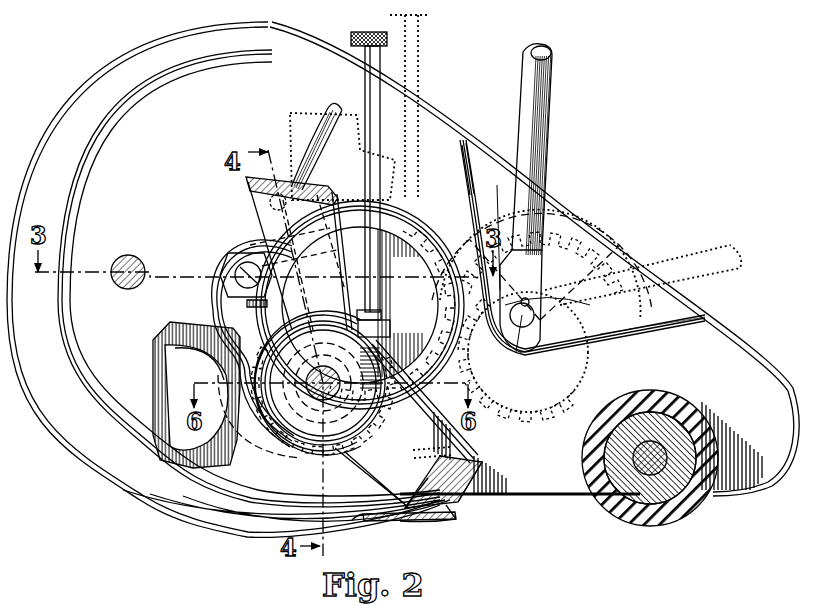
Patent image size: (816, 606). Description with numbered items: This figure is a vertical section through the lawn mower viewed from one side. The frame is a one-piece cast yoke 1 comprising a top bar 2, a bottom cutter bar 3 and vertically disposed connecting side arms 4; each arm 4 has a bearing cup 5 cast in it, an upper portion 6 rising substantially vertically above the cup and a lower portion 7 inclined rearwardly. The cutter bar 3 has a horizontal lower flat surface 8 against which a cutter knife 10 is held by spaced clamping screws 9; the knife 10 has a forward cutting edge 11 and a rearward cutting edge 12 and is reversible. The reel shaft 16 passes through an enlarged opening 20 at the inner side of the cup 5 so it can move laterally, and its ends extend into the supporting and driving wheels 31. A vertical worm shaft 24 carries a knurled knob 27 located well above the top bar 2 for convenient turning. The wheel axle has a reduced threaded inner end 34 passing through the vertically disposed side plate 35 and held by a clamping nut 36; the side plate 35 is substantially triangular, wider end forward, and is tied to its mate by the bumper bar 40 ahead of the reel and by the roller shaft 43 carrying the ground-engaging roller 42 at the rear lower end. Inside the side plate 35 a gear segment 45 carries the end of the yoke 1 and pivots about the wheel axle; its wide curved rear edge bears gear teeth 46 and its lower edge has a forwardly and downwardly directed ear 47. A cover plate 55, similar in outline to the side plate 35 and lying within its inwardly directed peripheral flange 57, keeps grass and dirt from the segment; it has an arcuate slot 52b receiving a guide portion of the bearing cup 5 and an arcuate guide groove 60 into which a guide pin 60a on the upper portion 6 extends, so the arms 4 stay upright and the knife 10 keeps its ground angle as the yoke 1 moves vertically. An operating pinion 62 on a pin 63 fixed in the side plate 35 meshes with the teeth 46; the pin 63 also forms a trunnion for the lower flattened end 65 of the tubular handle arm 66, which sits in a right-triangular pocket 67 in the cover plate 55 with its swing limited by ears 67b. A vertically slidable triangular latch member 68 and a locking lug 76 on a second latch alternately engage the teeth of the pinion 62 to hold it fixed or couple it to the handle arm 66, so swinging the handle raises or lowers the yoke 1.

The yoke 1 is at (250, 212).
The top bar 2 is at (246, 181).
The bottom cutter bar 3 is at (455, 495).
The connecting side arms 4 is at (372, 452).
The bearing cup 5 is at (282, 412).
The upper portion of arm 6 is at (272, 308).
The lower portion of arm 7 is at (470, 463).
The lower flat surface 8 is at (437, 500).
The clamping screws 9 is at (424, 523).
The cutter knife 10 is at (395, 522).
The forward cutting edge 11 is at (378, 522).
The rearward cutting edge 12 is at (447, 512).
The shaft 16 is at (323, 366).
The enlarged opening 20 is at (312, 414).
The worm shaft 24 is at (374, 110).
The knurled knob 27 is at (364, 35).
The supporting and driving wheels 31 is at (82, 80).
The reduced threaded inner end 34 is at (240, 266).
The side plate 35 is at (172, 364).
The clamping nut 36 is at (234, 271).
The bumper bar 40 is at (123, 257).
The ground-engaging roller 42 is at (688, 512).
The roller shaft 43 is at (641, 504).
The gear segment 45 is at (358, 293).
The gear teeth 46 is at (398, 418).
The extension or ear 47 is at (178, 395).
The arcuate slot 52b is at (428, 226).
The cover plate 55 is at (118, 147).
The inwardly directed peripheral flange 57 is at (138, 100).
The arcuate guide groove 60 is at (318, 150).
The guide pin 60a is at (293, 247).
The operating pinion 62 is at (588, 229).
The pin 63 is at (530, 352).
The lower flattened end 65 is at (590, 326).
The handle arm 66 is at (548, 115).
The pocket 67 is at (497, 188).
The ears 67b is at (466, 144).
The latch member 68 is at (567, 207).
The locking lug 76 is at (542, 203).